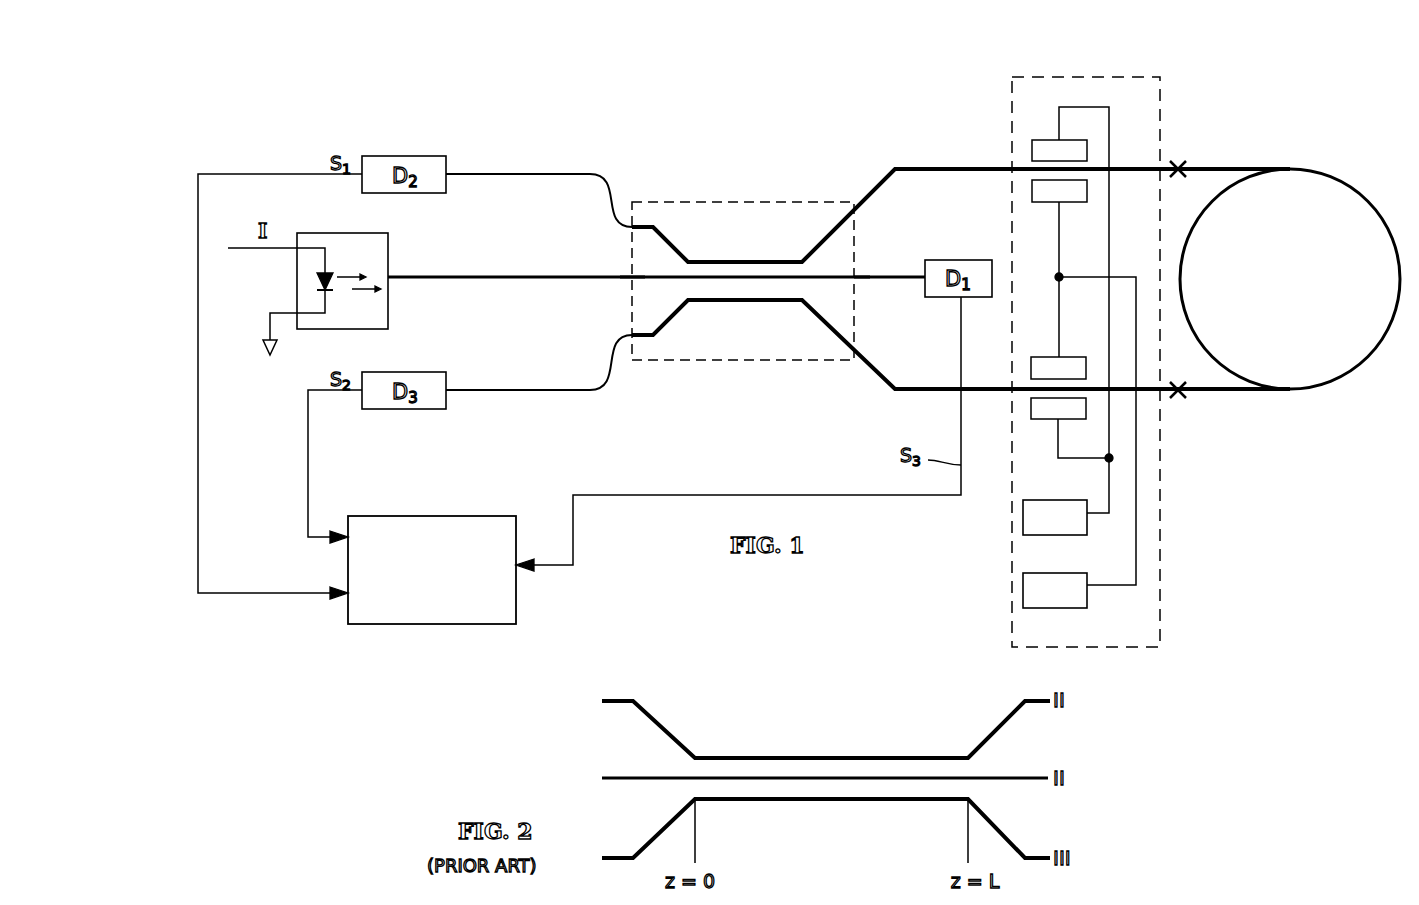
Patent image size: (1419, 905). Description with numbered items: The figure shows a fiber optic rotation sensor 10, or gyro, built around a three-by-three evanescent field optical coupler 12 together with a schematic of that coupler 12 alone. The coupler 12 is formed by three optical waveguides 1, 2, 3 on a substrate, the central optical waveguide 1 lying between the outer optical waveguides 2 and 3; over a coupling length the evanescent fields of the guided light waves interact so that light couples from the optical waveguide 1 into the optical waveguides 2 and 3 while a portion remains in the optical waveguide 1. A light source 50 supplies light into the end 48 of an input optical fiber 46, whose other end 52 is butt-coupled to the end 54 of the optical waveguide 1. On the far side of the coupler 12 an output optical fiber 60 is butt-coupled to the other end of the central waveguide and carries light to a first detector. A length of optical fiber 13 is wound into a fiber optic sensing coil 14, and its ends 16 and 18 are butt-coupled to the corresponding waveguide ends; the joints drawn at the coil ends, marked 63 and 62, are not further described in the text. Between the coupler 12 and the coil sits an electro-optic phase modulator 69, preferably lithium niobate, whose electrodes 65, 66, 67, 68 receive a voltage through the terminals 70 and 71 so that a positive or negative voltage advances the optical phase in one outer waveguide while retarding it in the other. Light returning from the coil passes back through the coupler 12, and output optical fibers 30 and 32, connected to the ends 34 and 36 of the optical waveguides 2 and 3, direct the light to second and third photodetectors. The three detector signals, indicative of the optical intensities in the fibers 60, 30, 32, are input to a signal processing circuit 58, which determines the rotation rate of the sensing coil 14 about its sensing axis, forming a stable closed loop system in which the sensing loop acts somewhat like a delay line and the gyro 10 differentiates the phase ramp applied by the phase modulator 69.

In FIG. 1, the optical waveguide 1 is at (720, 277).
In FIG. 2, the optical waveguide 1 is at (890, 778).
In FIG. 1, the optical waveguide 2 is at (765, 262).
In FIG. 2, the optical waveguide 2 is at (787, 758).
In FIG. 1, the optical waveguide 3 is at (783, 302).
In FIG. 2, the optical waveguide 3 is at (853, 800).
In FIG. 1, the fiber optic rotation sensor 10 is at (335, 667).
In FIG. 1, the 3×3 optical coupler 12 is at (722, 362).
In FIG. 2, the 3×3 optical coupler 12 is at (1080, 785).
In FIG. 1, the optical fiber 13 is at (1283, 393).
In FIG. 1, the fiber optic sensing coil 14 is at (1338, 375).
In FIG. 1, the fiber end 16 is at (1200, 168).
In FIG. 1, the fiber end 18 is at (1230, 393).
In FIG. 1, the output optical fiber 30 is at (497, 172).
In FIG. 1, the output optical fiber 32 is at (498, 392).
In FIG. 1, the waveguide end 34 is at (636, 226).
In FIG. 1, the waveguide end 36 is at (634, 338).
In FIG. 1, the input optical fiber 46 is at (489, 280).
In FIG. 1, the input fiber end 48 is at (390, 279).
In FIG. 1, the light source 50 is at (388, 258).
In FIG. 1, the input fiber end 52 is at (630, 283).
In FIG. 1, the waveguide end 54 is at (633, 277).
In FIG. 1, the signal processing circuit 58 is at (418, 626).
In FIG. 1, the output optical fiber 60 is at (853, 277).
In FIG. 1, the splice 62 is at (1181, 417).
In FIG. 1, the splice 63 is at (1181, 150).
In FIG. 1, the phase modulator electrode 65 is at (1045, 203).
In FIG. 1, the phase modulator electrode 66 is at (1052, 357).
In FIG. 1, the phase modulator electrode 67 is at (1050, 420).
In FIG. 1, the phase modulator electrode 68 is at (1042, 140).
In FIG. 1, the electro-optic phase modulator 69 is at (1050, 362).
In FIG. 1, the phase modulator terminal PM1 70 is at (1087, 522).
In FIG. 1, the phase modulator terminal PM2 71 is at (1087, 598).